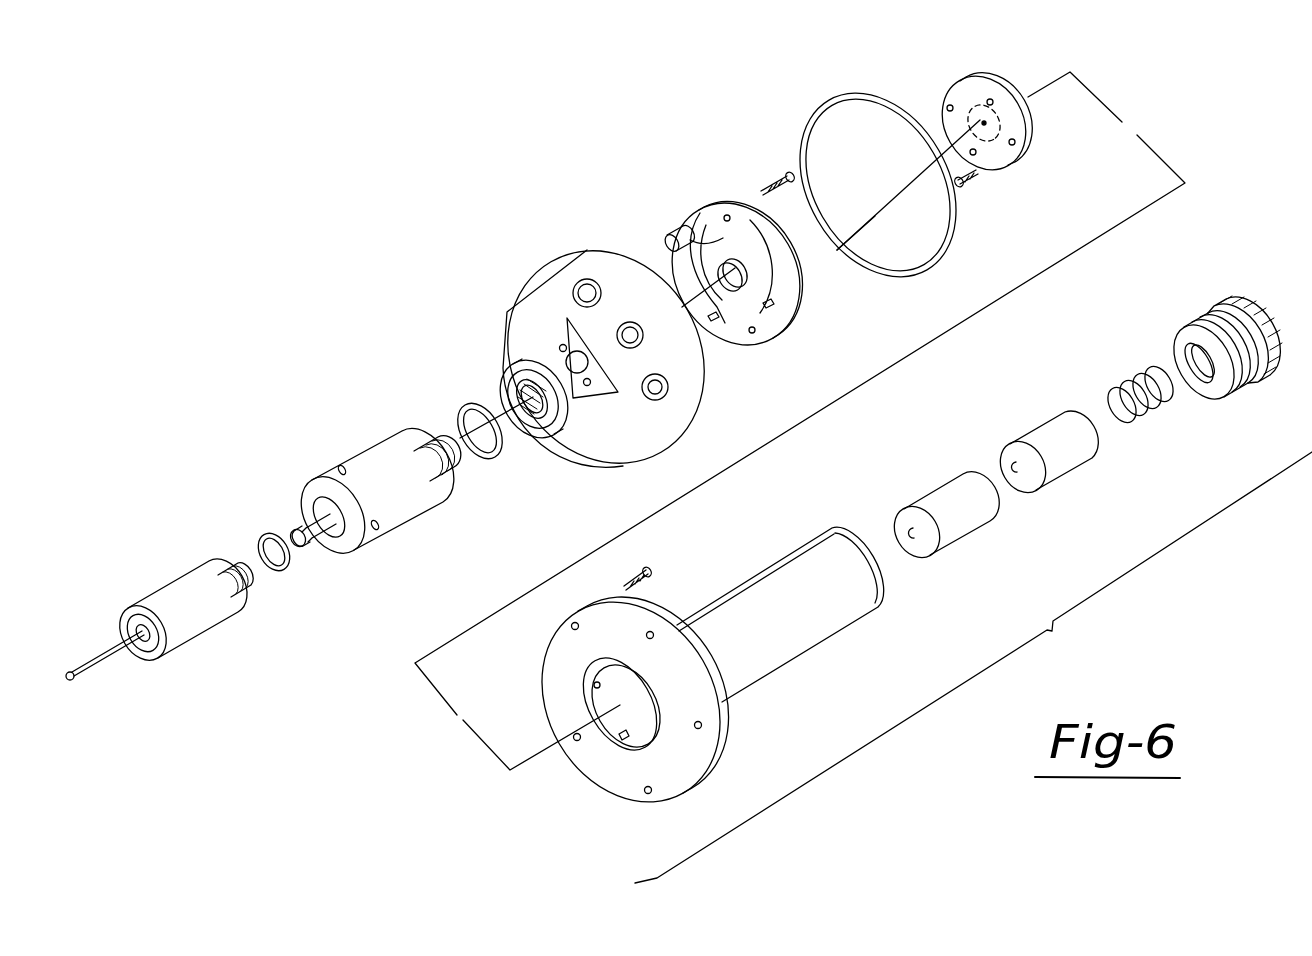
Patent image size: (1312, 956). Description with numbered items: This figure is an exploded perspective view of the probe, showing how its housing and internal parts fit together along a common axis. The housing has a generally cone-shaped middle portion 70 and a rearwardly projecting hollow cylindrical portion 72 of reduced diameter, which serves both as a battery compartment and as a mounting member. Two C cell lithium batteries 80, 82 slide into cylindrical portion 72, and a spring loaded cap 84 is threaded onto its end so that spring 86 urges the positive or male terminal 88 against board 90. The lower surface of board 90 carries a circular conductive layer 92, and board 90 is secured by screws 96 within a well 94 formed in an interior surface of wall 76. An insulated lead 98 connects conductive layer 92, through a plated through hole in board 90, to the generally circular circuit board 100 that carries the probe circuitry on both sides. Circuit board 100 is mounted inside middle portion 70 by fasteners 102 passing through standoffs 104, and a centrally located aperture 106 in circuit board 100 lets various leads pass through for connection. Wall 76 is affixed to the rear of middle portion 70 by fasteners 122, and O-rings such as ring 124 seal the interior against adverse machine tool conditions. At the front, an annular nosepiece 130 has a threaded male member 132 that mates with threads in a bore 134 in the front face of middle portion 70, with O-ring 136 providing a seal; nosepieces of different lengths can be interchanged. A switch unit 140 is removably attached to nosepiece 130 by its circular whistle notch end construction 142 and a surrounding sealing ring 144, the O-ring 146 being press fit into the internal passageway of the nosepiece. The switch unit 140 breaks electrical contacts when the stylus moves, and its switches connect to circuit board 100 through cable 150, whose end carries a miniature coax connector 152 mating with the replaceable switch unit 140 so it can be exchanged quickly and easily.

The middle portion 70 is at (597, 262).
The cylindrical portion 72 is at (767, 593).
The wall 76 is at (713, 752).
The lithium battery 80 is at (958, 493).
The lithium battery 82 is at (1065, 425).
The spring loaded cap 84 is at (1237, 308).
The spring 86 is at (1133, 382).
The positive terminal 88 is at (907, 530).
The board 90 is at (1008, 40).
The conductive layer 92 is at (1005, 90).
The well 94 is at (610, 728).
The screws 96 is at (975, 178).
The insulated lead 98 is at (797, 265).
The circuit board 100 is at (775, 332).
The fasteners 102 is at (772, 172).
The standoffs 104 is at (673, 238).
The aperture 106 is at (728, 260).
The fasteners 122 is at (648, 568).
The O-ring 124 is at (880, 273).
The annular nosepiece 130 is at (352, 463).
The threaded male member 132 is at (440, 430).
The bore 134 is at (524, 414).
The O-ring 136 is at (462, 407).
The switch unit 140 is at (177, 597).
The whistle notch end construction 142 is at (255, 582).
The O-ring 144 is at (263, 533).
The O-ring 146 is at (330, 537).
The cable 150 is at (478, 425).
The miniature coax connector 152 is at (310, 537).